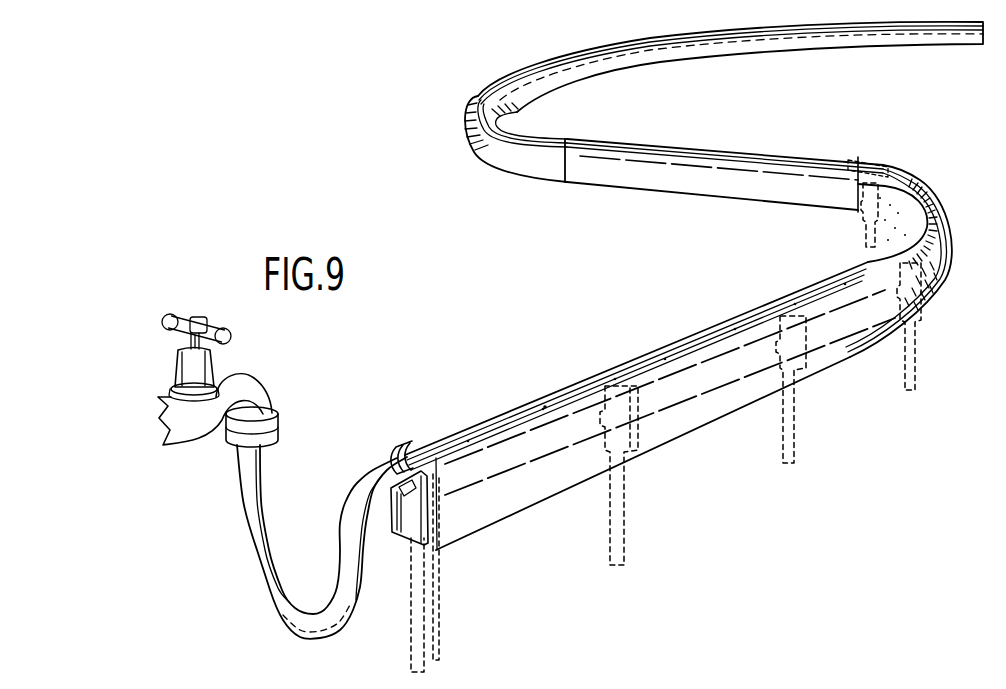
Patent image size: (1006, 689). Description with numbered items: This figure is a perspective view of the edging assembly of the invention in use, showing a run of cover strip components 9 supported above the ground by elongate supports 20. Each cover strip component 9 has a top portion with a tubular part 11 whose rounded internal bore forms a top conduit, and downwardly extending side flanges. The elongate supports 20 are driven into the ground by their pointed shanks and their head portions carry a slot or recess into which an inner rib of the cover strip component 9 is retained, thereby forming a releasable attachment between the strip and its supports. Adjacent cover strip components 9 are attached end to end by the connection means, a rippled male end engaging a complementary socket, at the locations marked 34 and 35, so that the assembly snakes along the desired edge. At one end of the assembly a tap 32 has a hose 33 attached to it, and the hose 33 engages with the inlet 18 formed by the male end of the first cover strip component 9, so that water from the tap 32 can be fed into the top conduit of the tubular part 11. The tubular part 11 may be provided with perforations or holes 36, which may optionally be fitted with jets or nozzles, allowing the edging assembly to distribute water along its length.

The cover strip component 9 is at (694, 286).
The tubular part 11 is at (450, 443).
The water inlet 18 is at (401, 450).
The elongate support 20 is at (432, 616).
The tap 32 is at (212, 363).
The hose 33 is at (262, 512).
The attachment location 34 is at (866, 162).
The attachment location 35 is at (563, 165).
The perforations or holes 36 is at (545, 405).